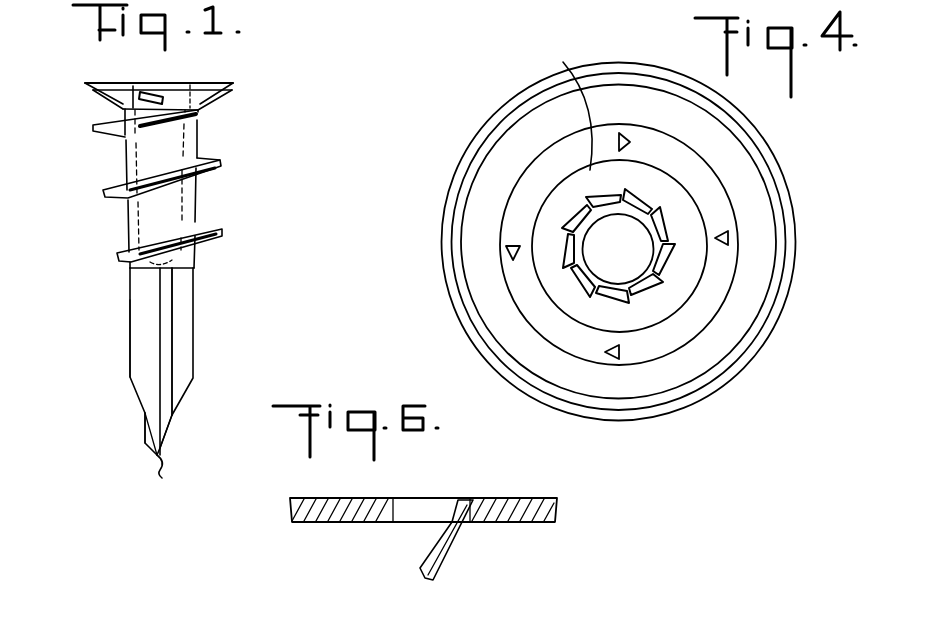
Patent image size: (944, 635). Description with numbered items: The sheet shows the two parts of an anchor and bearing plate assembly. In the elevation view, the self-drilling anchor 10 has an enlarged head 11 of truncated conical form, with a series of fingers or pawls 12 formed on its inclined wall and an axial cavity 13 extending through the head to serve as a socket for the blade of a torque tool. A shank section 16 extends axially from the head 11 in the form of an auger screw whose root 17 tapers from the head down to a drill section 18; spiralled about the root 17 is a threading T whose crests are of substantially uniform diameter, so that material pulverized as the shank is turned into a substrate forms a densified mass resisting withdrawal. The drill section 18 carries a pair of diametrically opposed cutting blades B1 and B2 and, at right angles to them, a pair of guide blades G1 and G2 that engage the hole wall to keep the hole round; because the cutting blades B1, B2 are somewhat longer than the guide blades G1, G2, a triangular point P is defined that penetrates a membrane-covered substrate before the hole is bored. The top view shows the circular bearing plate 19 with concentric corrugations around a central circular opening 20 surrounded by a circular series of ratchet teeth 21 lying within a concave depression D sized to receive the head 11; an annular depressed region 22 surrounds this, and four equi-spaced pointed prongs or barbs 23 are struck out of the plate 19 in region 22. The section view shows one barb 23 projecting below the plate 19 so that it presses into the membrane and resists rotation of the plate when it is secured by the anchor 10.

In FIG. 1, the self-drilling anchor 10 is at (231, 82).
In FIG. 1, the enlarged head 11 is at (218, 85).
In FIG. 1, the fingers or pawls 12 is at (157, 93).
In FIG. 1, the axial cavity 13 is at (185, 128).
In FIG. 1, the shank section 16 is at (205, 142).
In FIG. 1, the root 17 is at (187, 200).
In FIG. 1, the drill section 18 is at (205, 327).
In FIG. 4, the bearing plate 19 is at (742, 378).
In FIG. 6, the bearing plate 19 is at (357, 497).
In FIG. 4, the central circular opening 20 is at (618, 249).
In FIG. 4, the ratchet teeth 21 is at (660, 207).
In FIG. 4, the annular depressed region 22 is at (713, 302).
In FIG. 4, the pointed prongs or barbs 23 is at (730, 239).
In FIG. 6, the pointed prongs or barbs 23 is at (418, 576).
In FIG. 1, the threading T is at (116, 190).
In FIG. 4, the concave depression D is at (571, 103).
In FIG. 1, the guide blade G1 is at (172, 363).
In FIG. 1, the guide blade G2 is at (128, 378).
In FIG. 1, the cutting blade B1 is at (168, 420).
In FIG. 1, the cutting blade B2 is at (145, 445).
In FIG. 1, the triangular point P is at (150, 478).